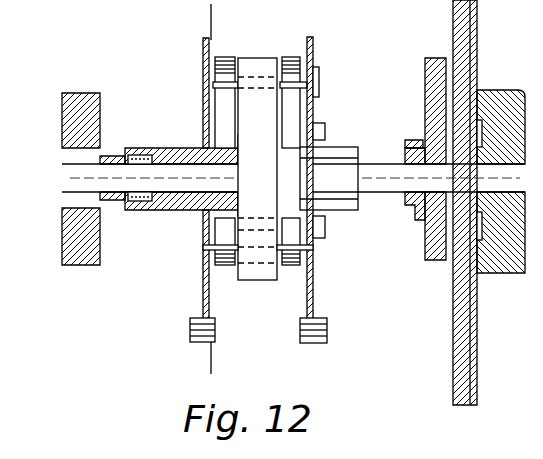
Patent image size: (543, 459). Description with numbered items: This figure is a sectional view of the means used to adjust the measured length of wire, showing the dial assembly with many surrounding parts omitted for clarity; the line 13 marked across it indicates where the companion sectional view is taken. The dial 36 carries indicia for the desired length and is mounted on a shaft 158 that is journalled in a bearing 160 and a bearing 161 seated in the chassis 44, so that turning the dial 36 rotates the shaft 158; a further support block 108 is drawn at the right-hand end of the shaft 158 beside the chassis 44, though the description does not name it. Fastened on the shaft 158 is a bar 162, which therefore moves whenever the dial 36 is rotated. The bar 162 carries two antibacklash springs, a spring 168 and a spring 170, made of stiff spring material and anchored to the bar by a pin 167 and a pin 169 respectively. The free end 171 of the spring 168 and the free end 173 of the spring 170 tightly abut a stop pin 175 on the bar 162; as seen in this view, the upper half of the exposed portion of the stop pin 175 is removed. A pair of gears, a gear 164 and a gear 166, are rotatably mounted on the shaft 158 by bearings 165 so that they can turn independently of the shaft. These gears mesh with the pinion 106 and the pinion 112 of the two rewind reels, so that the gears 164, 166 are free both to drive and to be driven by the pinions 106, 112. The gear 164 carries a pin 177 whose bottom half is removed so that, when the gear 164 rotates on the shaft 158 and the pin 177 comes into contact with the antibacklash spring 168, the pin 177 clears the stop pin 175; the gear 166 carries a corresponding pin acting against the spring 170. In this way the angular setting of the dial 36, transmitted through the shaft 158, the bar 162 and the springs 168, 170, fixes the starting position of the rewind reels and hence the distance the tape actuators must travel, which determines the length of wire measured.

The section line 13— 13 is at (209, 15).
The dial 36 is at (478, 320).
The chassis 44 is at (80, 262).
The pinion 106 is at (327, 331).
The bearing block 108 is at (505, 90).
The pinion 112 is at (190, 328).
The shaft 158 is at (410, 141).
The bearing 160 is at (416, 220).
The bearing 161 is at (66, 200).
The bar 162 is at (257, 282).
The gear 164 is at (313, 40).
The bearings 165 is at (140, 156).
The gear 166 is at (203, 67).
The pin 167 is at (212, 214).
The antibacklash spring 168 is at (300, 245).
The pin 169 is at (215, 259).
The antibacklash spring 170 is at (222, 240).
The free end 171 is at (290, 57).
The free end 173 is at (215, 62).
The stop pin 175 is at (230, 88).
The pin 177 is at (319, 76).